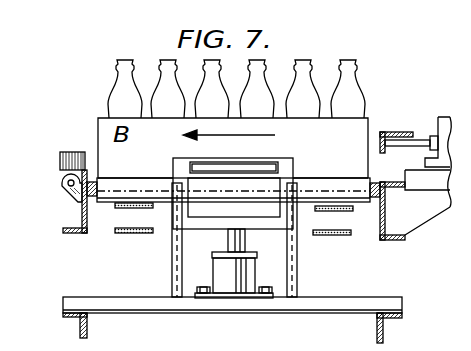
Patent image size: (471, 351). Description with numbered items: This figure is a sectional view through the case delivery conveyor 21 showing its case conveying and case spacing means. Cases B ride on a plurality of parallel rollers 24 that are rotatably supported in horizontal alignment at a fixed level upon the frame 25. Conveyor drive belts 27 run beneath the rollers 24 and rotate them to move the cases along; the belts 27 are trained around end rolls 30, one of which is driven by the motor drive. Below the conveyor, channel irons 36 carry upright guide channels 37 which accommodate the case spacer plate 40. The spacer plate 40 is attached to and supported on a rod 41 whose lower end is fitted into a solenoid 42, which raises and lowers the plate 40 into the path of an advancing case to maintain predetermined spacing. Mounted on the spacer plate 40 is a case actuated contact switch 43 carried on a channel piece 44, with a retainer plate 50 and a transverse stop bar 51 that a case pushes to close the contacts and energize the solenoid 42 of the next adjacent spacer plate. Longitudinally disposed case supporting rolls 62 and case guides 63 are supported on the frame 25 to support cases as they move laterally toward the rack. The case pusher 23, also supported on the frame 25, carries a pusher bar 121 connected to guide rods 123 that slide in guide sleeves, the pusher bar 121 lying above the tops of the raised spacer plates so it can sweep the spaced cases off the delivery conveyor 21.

The case delivery conveyor 21 is at (167, 243).
The case pusher 23 is at (416, 150).
The rollers 24 is at (138, 182).
The frame 25 is at (80, 212).
The conveyor drive belts 27 is at (123, 230).
The end rolls 30 is at (0, 235).
The channel irons 36 is at (378, 306).
The upright guide channels 37 is at (172, 278).
The case spacer plate 40 is at (235, 181).
The rod 41 is at (247, 242).
The solenoid 42 is at (247, 270).
The case actuated contact switch 43 is at (257, 155).
The channel piece 44 is at (214, 179).
The retainer plate 50 is at (402, 332).
The transverse stop bar 51 is at (200, 163).
The case supporting rolls 62 is at (62, 183).
The case guides 63 is at (72, 152).
The pusher bar 121 is at (393, 132).
The guide rods 123 is at (393, 146).